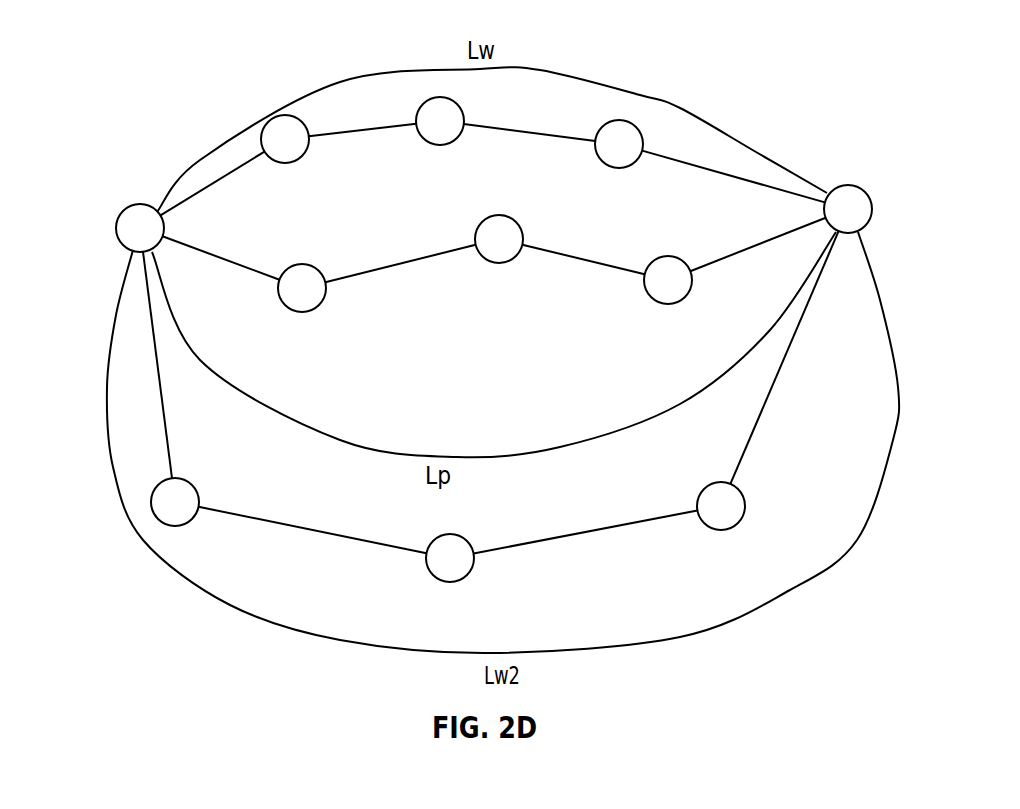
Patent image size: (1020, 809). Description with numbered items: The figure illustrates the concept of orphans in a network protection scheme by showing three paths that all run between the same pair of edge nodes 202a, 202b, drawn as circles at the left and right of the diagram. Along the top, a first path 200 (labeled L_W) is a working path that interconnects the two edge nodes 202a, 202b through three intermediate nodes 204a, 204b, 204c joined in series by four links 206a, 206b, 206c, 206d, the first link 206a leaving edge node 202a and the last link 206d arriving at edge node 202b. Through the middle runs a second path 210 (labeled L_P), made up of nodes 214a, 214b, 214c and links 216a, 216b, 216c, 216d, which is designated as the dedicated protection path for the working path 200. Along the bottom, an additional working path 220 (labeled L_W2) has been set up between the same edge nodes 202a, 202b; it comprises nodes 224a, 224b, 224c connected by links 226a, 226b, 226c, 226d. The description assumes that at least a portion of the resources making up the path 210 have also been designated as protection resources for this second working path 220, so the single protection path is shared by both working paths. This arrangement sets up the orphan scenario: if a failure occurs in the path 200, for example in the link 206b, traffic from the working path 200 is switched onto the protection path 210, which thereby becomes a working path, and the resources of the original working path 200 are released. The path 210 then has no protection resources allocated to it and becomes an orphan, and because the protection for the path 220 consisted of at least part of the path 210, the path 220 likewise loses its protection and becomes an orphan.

The first path 200 is at (492, 118).
The second path 210 is at (494, 344).
The additional working path 220 is at (503, 442).
The edge node 202a is at (104, 205).
The edge node 202b is at (882, 185).
The node 204a is at (246, 117).
The node 204b is at (402, 89).
The node 204c is at (660, 116).
The link 206a is at (233, 184).
The link 206b is at (366, 154).
The link 206c is at (529, 157).
The link 206d is at (733, 181).
The node 214a is at (331, 306).
The node 214b is at (470, 260).
The node 214c is at (625, 291).
The link 216a is at (247, 250).
The link 216b is at (400, 246).
The link 216c is at (583, 242).
The link 216d is at (751, 243).
The node 224a is at (213, 499).
The node 224b is at (480, 541).
The node 224c is at (753, 520).
The link 226a is at (206, 365).
The link 226b is at (313, 520).
The link 226c is at (586, 515).
The link 226d is at (794, 357).